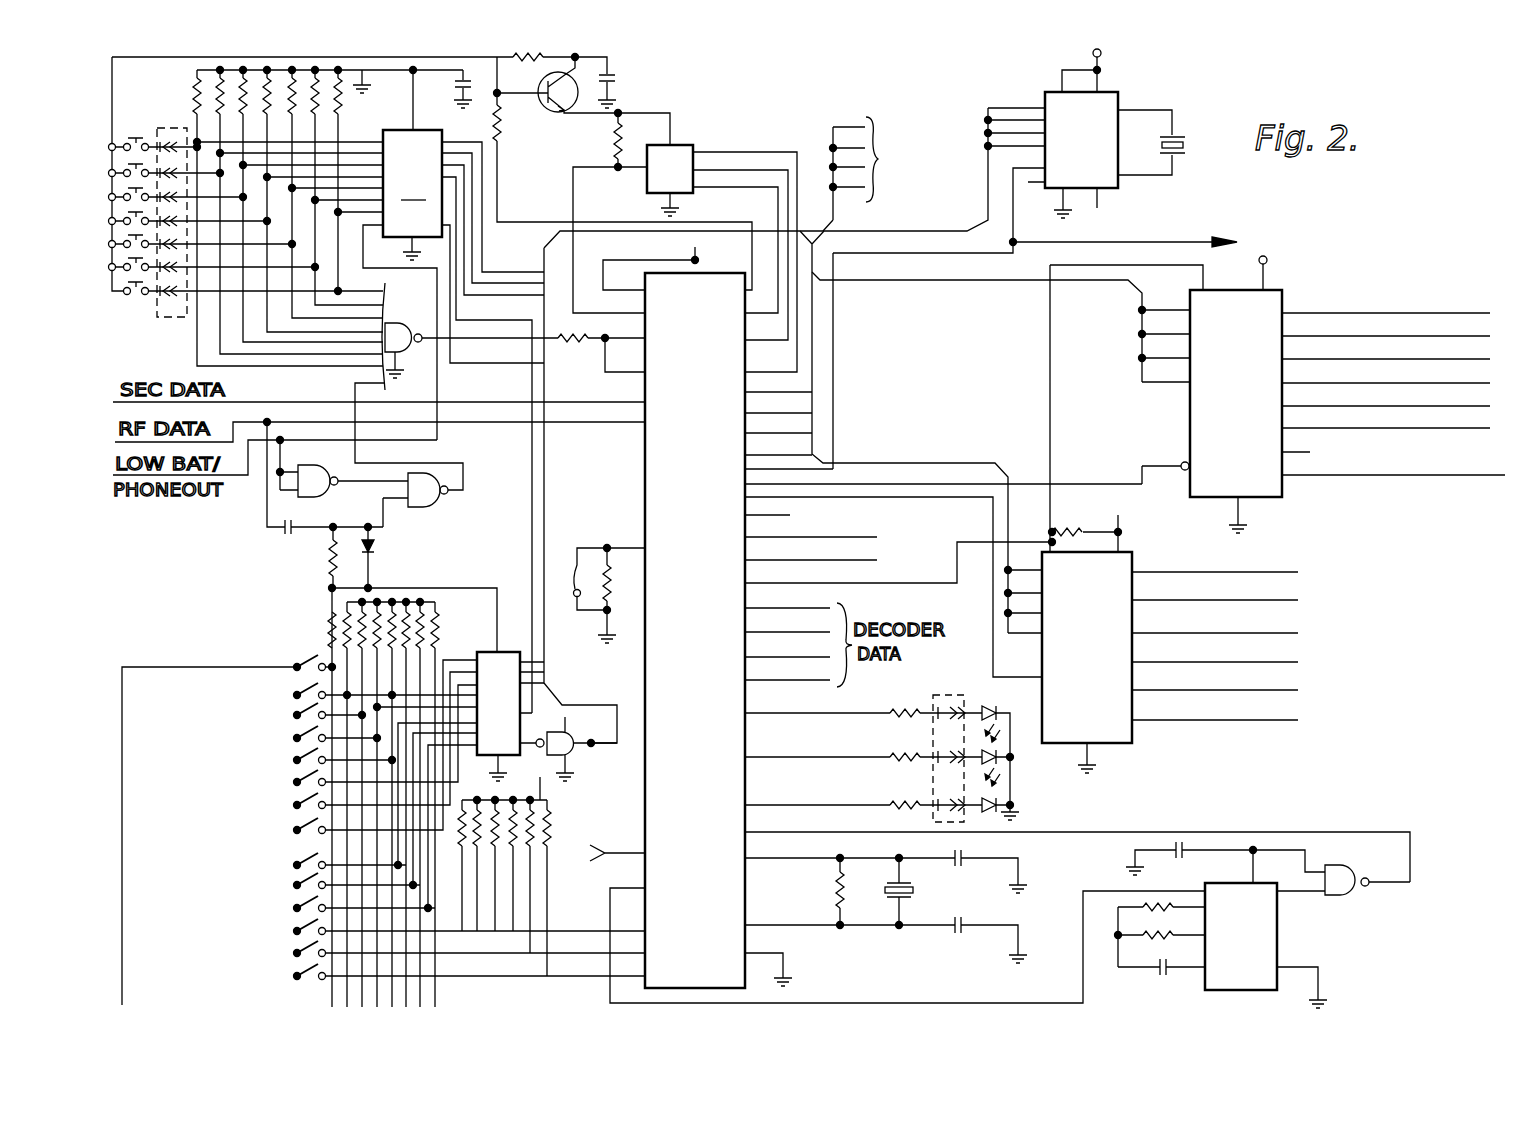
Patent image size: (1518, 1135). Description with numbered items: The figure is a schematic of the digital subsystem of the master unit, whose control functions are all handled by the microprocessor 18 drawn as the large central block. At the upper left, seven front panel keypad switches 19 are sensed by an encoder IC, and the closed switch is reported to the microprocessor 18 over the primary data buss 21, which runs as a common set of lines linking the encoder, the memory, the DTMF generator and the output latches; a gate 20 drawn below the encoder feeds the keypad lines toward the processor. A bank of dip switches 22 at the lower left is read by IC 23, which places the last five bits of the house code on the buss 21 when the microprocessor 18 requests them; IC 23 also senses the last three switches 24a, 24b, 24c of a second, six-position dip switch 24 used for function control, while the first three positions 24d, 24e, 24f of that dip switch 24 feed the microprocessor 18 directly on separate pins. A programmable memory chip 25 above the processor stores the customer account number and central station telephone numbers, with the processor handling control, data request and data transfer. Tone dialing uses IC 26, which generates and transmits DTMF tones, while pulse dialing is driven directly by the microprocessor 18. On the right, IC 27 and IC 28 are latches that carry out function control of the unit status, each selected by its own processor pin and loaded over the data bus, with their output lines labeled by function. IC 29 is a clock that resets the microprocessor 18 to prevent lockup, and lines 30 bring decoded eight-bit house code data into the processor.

The microprocessor 18 is at (705, 582).
The front panel keypad switches 19 is at (137, 305).
The NOR gate 20 is at (397, 326).
The primary data buss 21 is at (620, 231).
The dip switches 22 is at (300, 648).
The IC 23 is at (512, 715).
The second dip switch 24 is at (286, 833).
The switch 24a is at (296, 860).
The switch 24b is at (296, 880).
The switch 24c is at (296, 903).
The first position 24d is at (296, 924).
The first position 24e is at (386, 951).
The first position 24f is at (294, 965).
The programmable memory chip 25 is at (682, 187).
The IC 26 is at (1092, 150).
The IC 27 is at (1247, 409).
The IC 28 is at (1097, 655).
The clock 29 is at (1253, 950).
The lines 30 is at (848, 668).